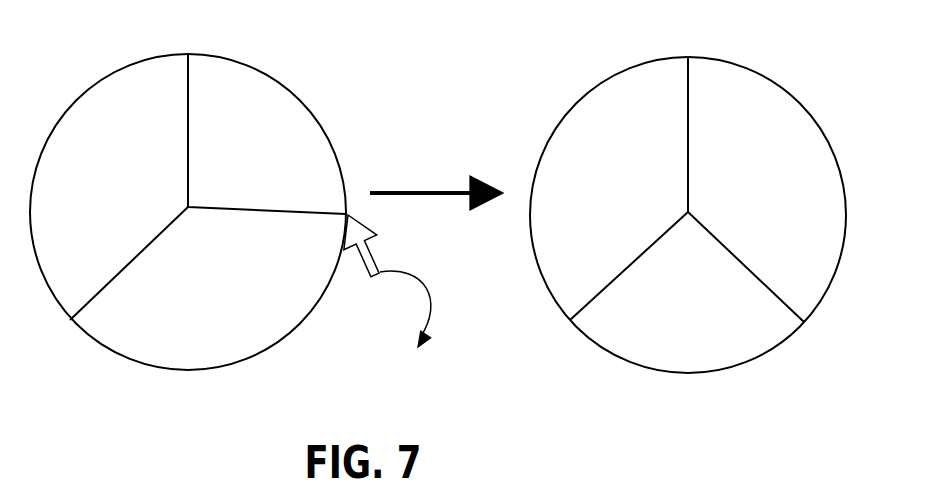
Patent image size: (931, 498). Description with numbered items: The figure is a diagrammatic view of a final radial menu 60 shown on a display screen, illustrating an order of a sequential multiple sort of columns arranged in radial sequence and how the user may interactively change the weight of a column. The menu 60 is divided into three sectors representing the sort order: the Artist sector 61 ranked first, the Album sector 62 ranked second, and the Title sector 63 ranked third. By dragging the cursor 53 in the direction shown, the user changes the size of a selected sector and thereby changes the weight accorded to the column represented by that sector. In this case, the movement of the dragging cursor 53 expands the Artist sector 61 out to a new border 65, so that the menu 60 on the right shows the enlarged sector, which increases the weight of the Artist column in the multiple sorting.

The menu 60 is at (237, 60).
The Artist sector 61 is at (226, 205).
The sector 62 is at (135, 323).
The sector 63 is at (68, 226).
The dragging cursor 53 is at (362, 262).
The border 65 is at (804, 322).